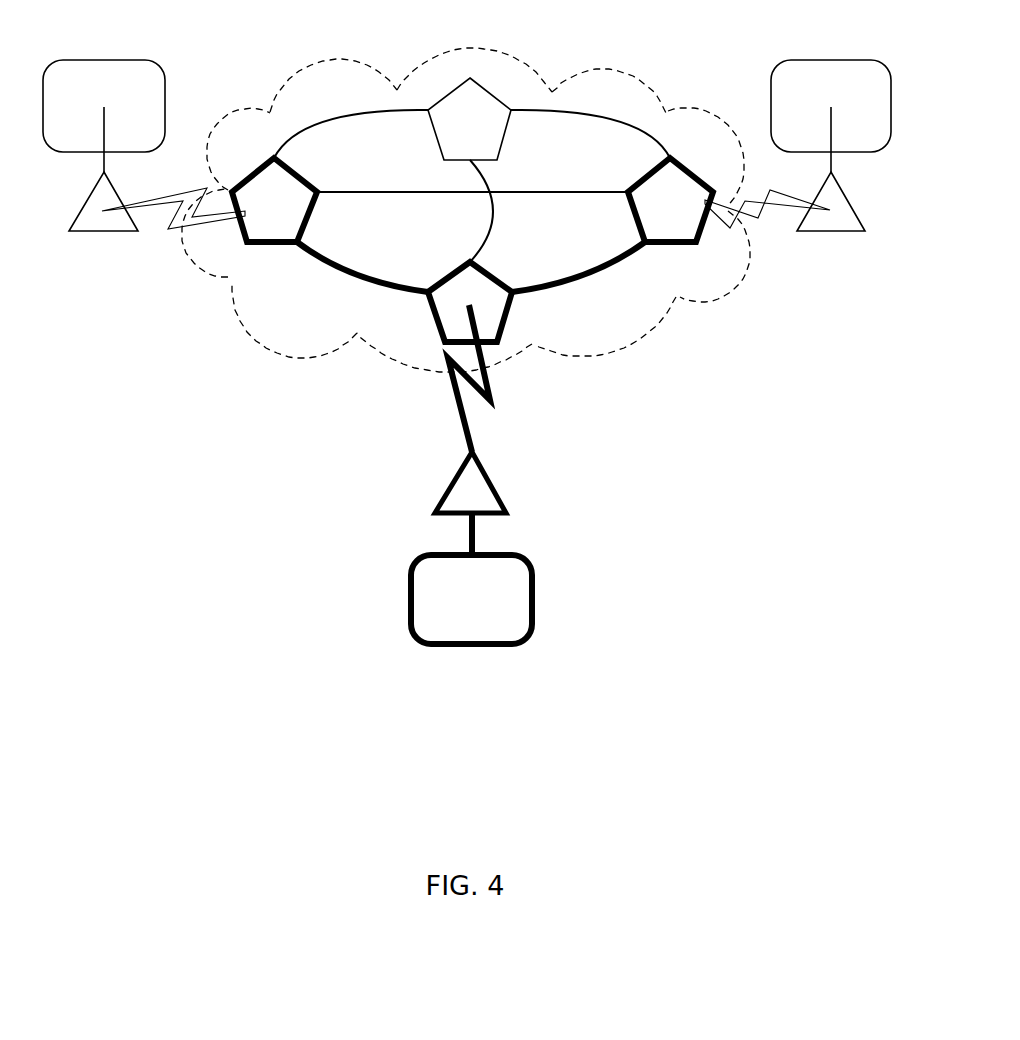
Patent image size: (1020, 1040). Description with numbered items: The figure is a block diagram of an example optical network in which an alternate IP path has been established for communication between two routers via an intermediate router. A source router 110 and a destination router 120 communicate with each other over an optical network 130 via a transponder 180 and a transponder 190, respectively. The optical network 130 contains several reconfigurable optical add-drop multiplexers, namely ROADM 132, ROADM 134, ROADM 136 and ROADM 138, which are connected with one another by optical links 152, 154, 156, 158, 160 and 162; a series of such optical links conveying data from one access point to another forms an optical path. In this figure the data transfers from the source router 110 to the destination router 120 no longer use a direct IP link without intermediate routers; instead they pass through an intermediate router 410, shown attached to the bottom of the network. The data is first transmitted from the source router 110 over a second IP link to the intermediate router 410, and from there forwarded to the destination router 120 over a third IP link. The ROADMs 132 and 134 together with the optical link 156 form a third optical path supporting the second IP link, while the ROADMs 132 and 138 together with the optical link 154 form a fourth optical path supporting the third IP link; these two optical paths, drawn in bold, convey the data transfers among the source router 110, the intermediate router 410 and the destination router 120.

The source router 110 is at (78, 60).
The destination router 120 is at (813, 60).
The optical network 130 is at (267, 348).
The reconfigurable optical add-drop multiplexer (ROADM) 132 is at (430, 310).
The reconfigurable optical add-drop multiplexer (ROADM) 134 is at (268, 245).
The reconfigurable optical add-drop multiplexer (ROADM) 136 is at (470, 78).
The reconfigurable optical add-drop multiplexer (ROADM) 138 is at (687, 245).
The optical link 152 is at (577, 193).
The optical link 154 is at (612, 267).
The optical link 156 is at (370, 273).
The optical link 158 is at (340, 122).
The optical link 160 is at (587, 112).
The optical link 162 is at (494, 212).
The transponder 180 is at (68, 231).
The transponder 190 is at (865, 231).
The intermediate router 410 is at (433, 648).